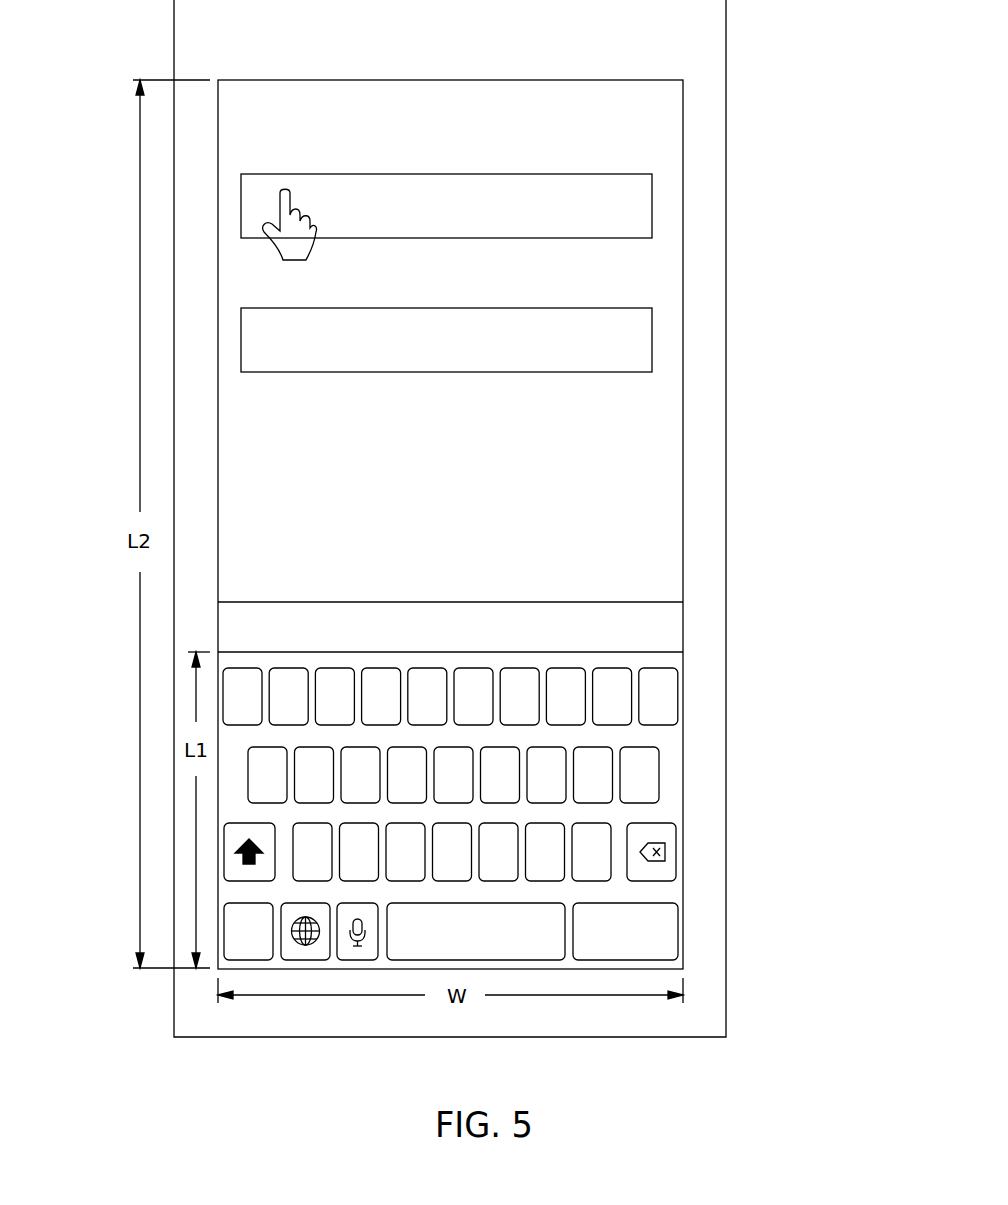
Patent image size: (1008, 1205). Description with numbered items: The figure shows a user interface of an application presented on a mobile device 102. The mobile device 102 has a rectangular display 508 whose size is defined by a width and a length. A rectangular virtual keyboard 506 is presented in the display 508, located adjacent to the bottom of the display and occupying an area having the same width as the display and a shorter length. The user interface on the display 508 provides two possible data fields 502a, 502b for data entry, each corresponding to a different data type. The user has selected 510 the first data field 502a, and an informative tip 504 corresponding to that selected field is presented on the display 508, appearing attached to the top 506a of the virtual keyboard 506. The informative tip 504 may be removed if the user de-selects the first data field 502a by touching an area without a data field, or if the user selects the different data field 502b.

The mobile device 102 is at (174, 1021).
The first data field 502a is at (652, 205).
The second data field 502b is at (652, 340).
The informative tip 504 is at (648, 623).
The virtual keyboard 506 is at (673, 808).
The top of the virtual keyboard 506a is at (602, 652).
The display 508 is at (218, 438).
The user selection 510 is at (280, 208).